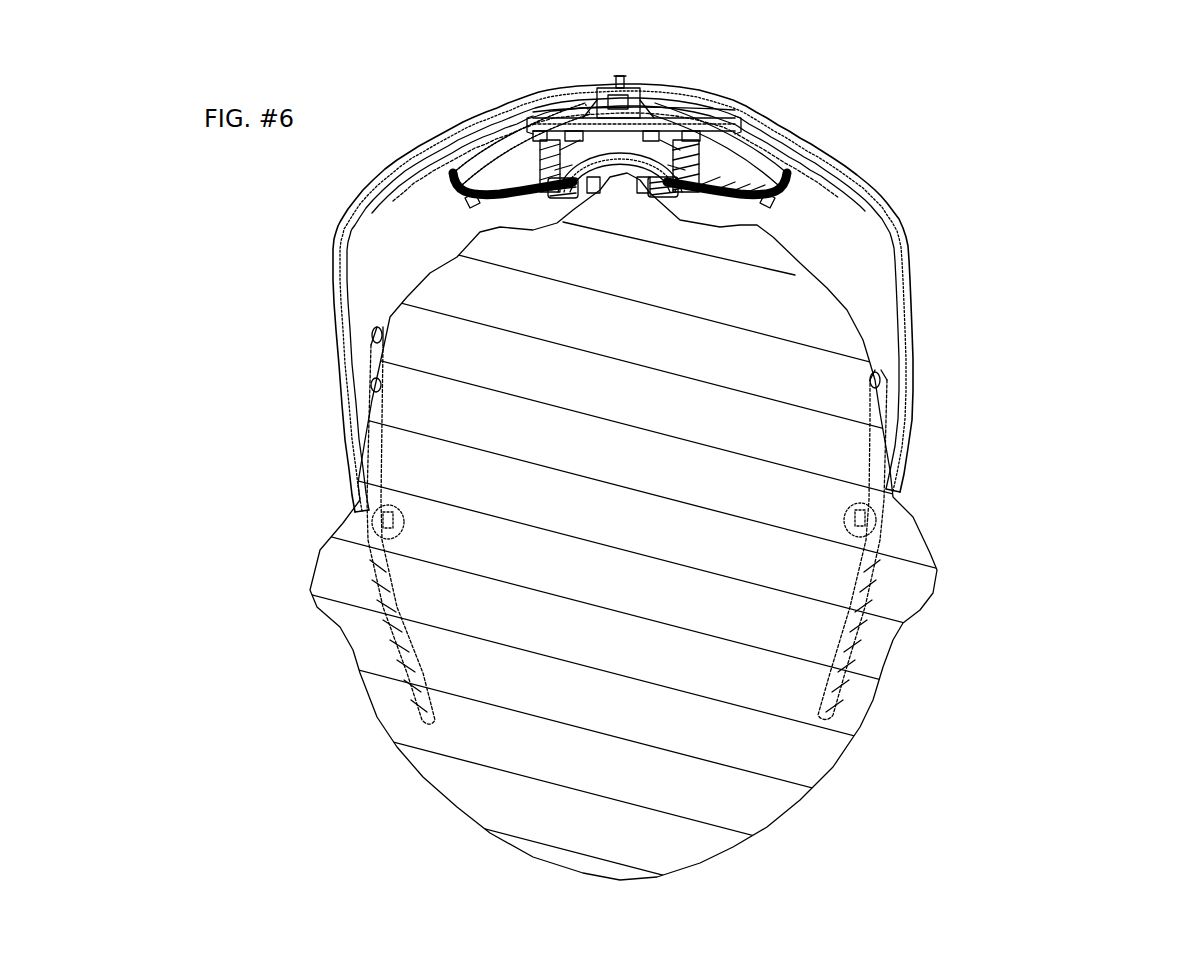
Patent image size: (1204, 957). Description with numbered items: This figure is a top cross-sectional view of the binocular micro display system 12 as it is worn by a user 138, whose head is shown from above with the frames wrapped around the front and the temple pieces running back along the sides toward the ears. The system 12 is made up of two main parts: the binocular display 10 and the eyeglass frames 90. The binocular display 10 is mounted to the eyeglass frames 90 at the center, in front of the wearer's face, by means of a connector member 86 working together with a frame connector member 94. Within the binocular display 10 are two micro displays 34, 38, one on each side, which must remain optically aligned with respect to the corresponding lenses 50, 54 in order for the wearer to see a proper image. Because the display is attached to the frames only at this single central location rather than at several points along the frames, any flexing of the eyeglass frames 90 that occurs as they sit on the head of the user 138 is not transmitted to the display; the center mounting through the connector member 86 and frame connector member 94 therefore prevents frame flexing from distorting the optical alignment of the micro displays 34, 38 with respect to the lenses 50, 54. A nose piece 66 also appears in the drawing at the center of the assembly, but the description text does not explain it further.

The binocular display 10 is at (587, 90).
The binocular micro display system 12 is at (1060, 192).
The micro display 34 is at (530, 137).
The micro display 38 is at (720, 112).
The lens 50 is at (473, 202).
The lens 54 is at (768, 198).
The nose piece 66 is at (552, 193).
The connector member 86 is at (617, 76).
The eyeglass frames 90 is at (903, 205).
The frame connector member 94 is at (645, 97).
The user 138 is at (933, 550).